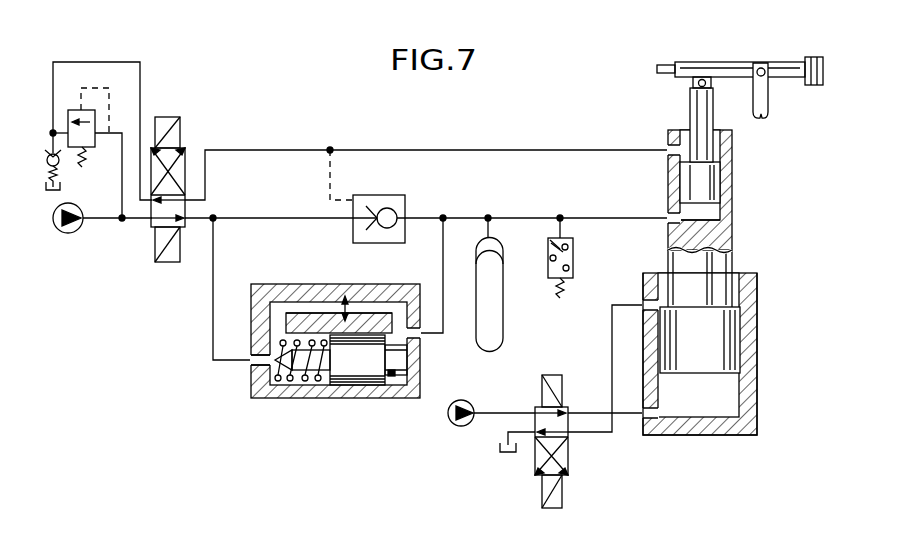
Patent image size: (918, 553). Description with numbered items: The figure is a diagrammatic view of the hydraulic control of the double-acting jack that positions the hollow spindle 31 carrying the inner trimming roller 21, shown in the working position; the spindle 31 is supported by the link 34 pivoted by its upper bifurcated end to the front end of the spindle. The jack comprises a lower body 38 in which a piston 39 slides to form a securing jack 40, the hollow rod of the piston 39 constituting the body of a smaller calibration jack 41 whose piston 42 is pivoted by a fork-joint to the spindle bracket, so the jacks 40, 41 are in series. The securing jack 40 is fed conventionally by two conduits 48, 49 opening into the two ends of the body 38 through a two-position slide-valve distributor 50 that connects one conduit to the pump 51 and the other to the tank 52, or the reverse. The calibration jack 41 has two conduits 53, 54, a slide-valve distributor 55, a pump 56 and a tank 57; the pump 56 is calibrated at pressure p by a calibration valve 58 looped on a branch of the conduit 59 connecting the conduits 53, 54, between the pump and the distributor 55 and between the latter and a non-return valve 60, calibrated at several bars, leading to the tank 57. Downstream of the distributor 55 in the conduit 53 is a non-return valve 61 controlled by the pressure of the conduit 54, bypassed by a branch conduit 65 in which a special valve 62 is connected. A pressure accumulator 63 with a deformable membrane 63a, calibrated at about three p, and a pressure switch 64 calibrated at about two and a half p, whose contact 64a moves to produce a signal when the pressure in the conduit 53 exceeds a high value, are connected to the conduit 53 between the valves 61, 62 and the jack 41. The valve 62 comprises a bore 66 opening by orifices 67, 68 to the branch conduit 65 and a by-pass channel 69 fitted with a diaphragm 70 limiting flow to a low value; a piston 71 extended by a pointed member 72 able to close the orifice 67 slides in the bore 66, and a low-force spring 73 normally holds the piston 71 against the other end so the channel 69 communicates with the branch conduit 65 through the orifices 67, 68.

The inner trimming roller 21 is at (814, 57).
The hollow spindle 31 is at (727, 62).
The link 34 is at (770, 100).
The lower body 38 is at (745, 380).
The piston 39 is at (716, 345).
The securing jack 40 is at (785, 270).
The calibration jack 41 is at (752, 162).
The piston 42 is at (706, 190).
The conduit 48 is at (612, 433).
The conduit 49 is at (612, 336).
The slide-valve distributor 50 is at (528, 449).
The pump 51 is at (468, 401).
The tank 52 is at (498, 448).
The conduit 53 is at (620, 216).
The conduit 54 is at (630, 150).
The slide-valve distributor 55 is at (190, 147).
The pump 56 is at (69, 233).
The tank 57 is at (62, 190).
The calibration valve 58 is at (95, 116).
The conduit 59 is at (122, 221).
The non-return valve 60 is at (56, 150).
The non-return valve 61 is at (395, 196).
The valve 62 is at (322, 402).
The pressure accumulator 63 is at (505, 326).
The deformable membrane 63a is at (500, 240).
The pressure switch 64 is at (573, 258).
The contact 64a is at (548, 241).
The branch conduit 65 is at (213, 308).
The bore 66 is at (391, 378).
The orifice 67 is at (254, 363).
The orifice 68 is at (420, 334).
The channel 69 is at (306, 313).
The diaphragm 70 is at (345, 296).
The piston 71 is at (356, 378).
The pointed member 72 is at (303, 368).
The spring 73 is at (274, 383).